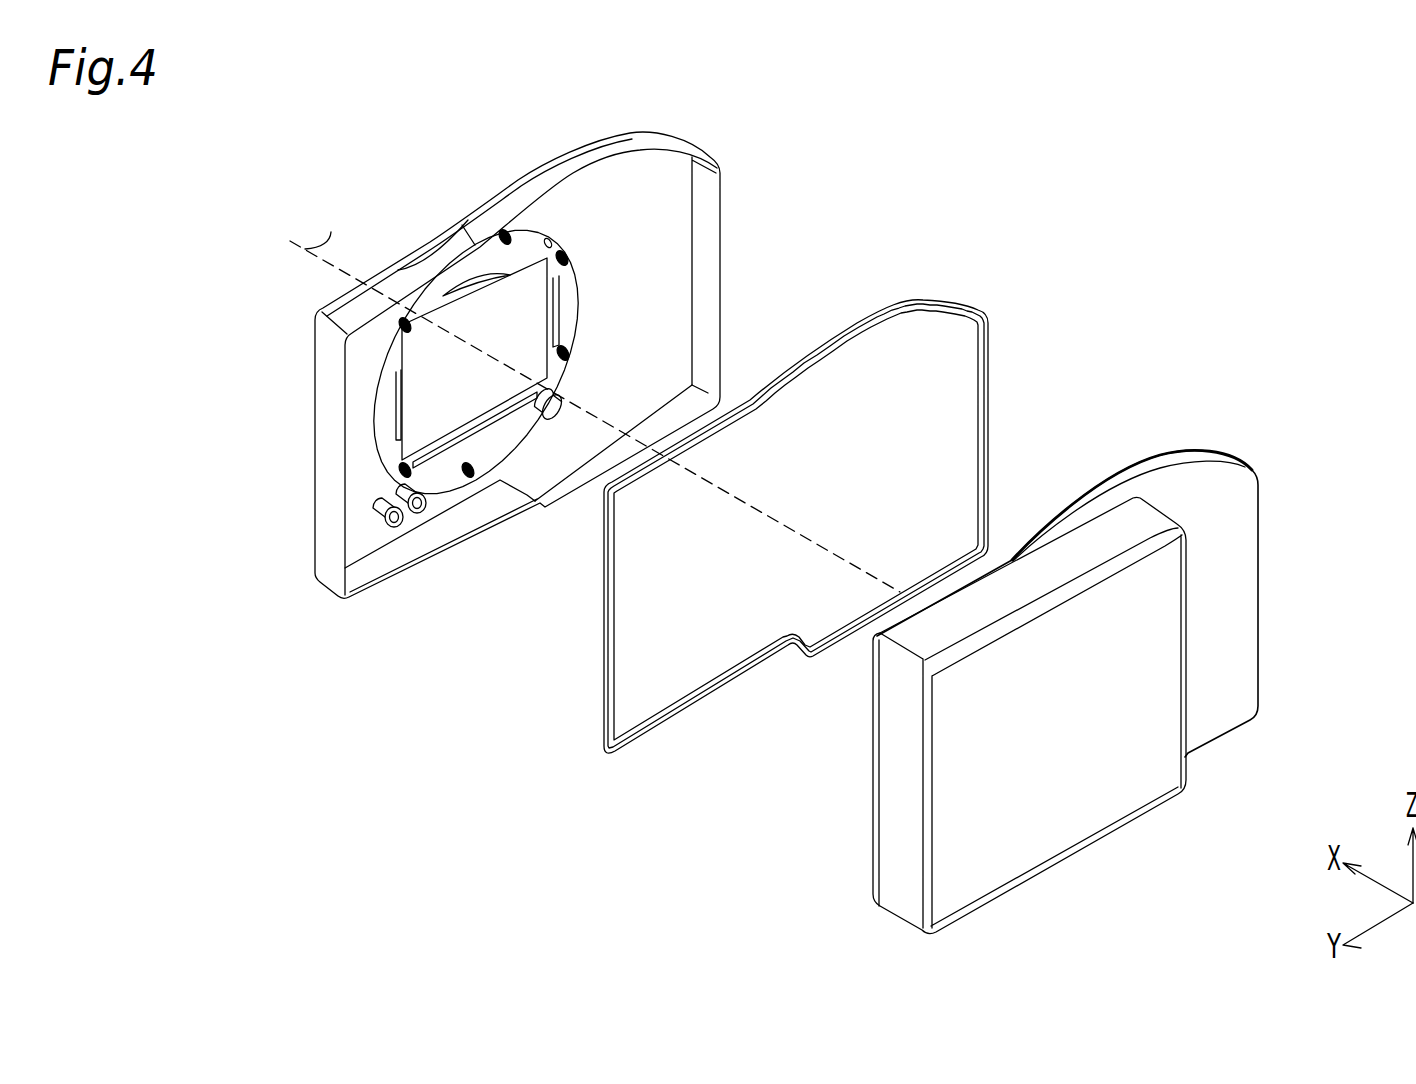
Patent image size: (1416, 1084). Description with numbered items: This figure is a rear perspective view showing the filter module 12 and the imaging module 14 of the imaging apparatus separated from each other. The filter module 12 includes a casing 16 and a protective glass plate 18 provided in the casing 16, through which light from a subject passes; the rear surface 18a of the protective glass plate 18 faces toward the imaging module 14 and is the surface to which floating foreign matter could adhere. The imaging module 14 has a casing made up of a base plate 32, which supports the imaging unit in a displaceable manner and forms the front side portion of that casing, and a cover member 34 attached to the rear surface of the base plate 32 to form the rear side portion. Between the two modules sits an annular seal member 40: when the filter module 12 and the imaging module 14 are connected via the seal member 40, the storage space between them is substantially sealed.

The filter module 12 is at (595, 342).
The imaging module 14 is at (1105, 643).
The casing 16 is at (667, 143).
The protective glass plate 18 is at (476, 361).
The rear surface 18a is at (424, 351).
The base plate 32 is at (1252, 514).
The cover member 34 is at (1037, 722).
The seal member 40 is at (963, 305).